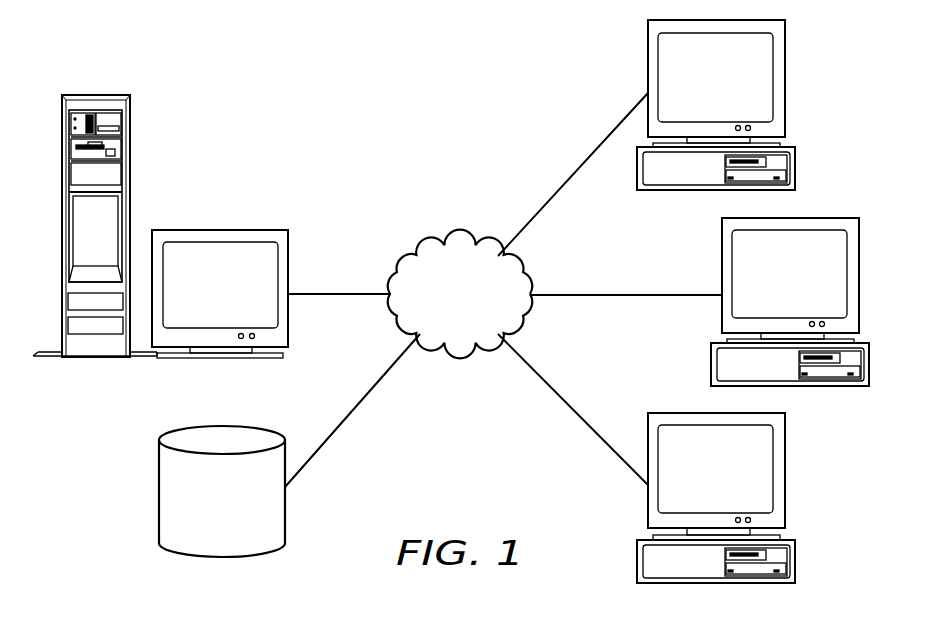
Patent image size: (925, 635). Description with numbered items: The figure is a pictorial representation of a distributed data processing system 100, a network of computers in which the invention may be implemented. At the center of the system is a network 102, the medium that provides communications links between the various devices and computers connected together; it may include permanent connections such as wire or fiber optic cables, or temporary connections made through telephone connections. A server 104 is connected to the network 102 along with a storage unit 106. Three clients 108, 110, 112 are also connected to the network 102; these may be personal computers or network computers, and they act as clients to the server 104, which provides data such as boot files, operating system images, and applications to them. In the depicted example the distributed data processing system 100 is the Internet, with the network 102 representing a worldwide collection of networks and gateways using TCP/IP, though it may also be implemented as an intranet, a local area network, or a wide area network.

The distributed data processing system 100 is at (247, 76).
The network 102 is at (477, 321).
The server 104 is at (203, 296).
The storage unit 106 is at (203, 530).
The client 108 is at (716, 118).
The client 110 is at (790, 314).
The client 112 is at (716, 511).